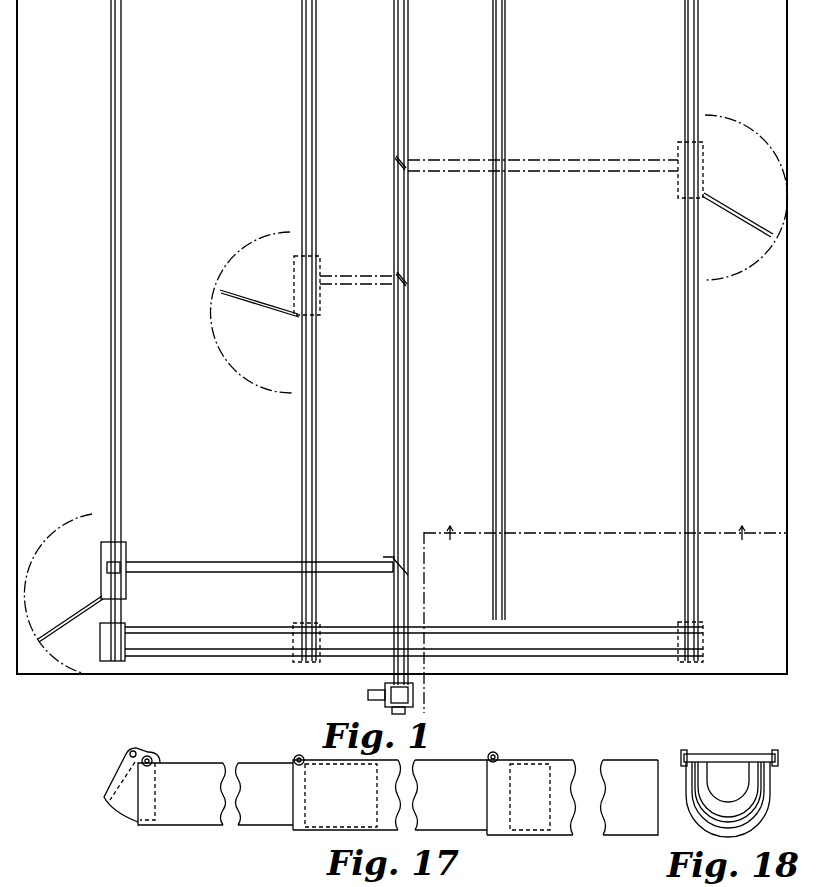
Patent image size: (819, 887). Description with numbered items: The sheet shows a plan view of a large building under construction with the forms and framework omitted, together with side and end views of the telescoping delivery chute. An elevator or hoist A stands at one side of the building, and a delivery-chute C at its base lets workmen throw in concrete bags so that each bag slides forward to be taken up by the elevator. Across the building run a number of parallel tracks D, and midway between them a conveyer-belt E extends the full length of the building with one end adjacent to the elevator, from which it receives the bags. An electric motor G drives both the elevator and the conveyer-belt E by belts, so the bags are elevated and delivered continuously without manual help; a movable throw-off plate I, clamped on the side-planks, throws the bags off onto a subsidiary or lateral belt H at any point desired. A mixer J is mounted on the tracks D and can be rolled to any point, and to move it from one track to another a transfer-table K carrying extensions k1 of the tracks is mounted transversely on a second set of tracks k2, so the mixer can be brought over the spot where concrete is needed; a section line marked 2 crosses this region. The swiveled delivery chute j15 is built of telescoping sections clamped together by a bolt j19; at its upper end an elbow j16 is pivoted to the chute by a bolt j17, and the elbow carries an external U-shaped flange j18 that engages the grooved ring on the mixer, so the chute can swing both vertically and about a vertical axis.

In FIG. 1, the parallel tracks D is at (122, 241).
In FIG. 1, the conveyer-belt E is at (409, 360).
In FIG. 1, the subsidiary or lateral belt H is at (556, 165).
In FIG. 1, the movable throw-off plate I is at (394, 160).
In FIG. 1, the mixer J is at (128, 548).
In FIG. 1, the swiveled delivery-trough or chute j15 is at (72, 622).
In FIG. 17, the swiveled delivery-trough or chute j15 is at (440, 760).
In FIG. 18, the swiveled delivery-trough or chute j15 is at (690, 822).
In FIG. 1, the transfer-table K is at (126, 630).
In FIG. 1, the track extensions k1 is at (104, 648).
In FIG. 1, the second set of tracks k2 is at (556, 645).
In FIG. 1, the section line 2- 2 is at (606, 617).
In FIG. 1, the elevator or hoist A is at (413, 700).
In FIG. 1, the electric motor G is at (368, 694).
In FIG. 1, the delivery-chute C is at (405, 710).
In FIG. 17, the elbow j16 is at (130, 812).
In FIG. 18, the elbow j16 is at (745, 806).
In FIG. 17, the bolt j17 is at (158, 760).
In FIG. 17, the external U-shaped flange j18 is at (122, 776).
In FIG. 18, the external U-shaped flange j18 is at (706, 782).
In FIG. 17, the bolt j19 is at (300, 754).
In FIG. 18, the bolt j19 is at (729, 757).